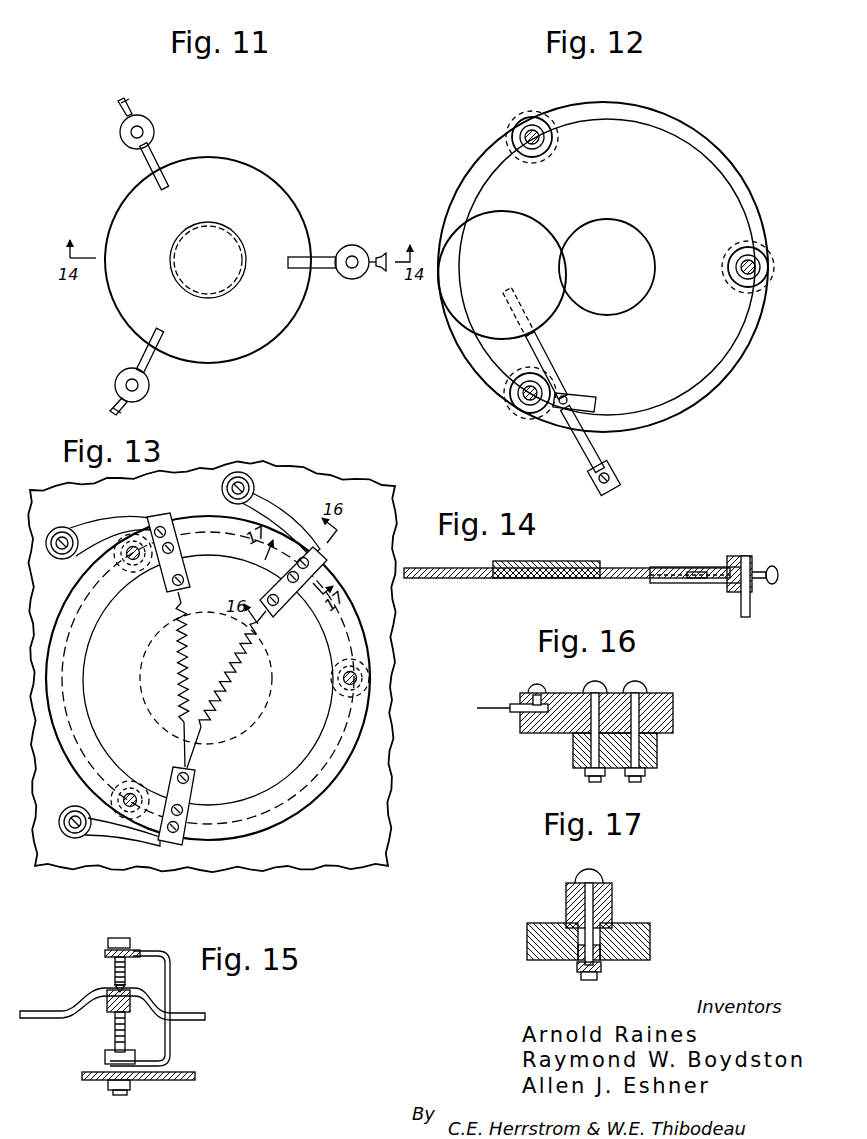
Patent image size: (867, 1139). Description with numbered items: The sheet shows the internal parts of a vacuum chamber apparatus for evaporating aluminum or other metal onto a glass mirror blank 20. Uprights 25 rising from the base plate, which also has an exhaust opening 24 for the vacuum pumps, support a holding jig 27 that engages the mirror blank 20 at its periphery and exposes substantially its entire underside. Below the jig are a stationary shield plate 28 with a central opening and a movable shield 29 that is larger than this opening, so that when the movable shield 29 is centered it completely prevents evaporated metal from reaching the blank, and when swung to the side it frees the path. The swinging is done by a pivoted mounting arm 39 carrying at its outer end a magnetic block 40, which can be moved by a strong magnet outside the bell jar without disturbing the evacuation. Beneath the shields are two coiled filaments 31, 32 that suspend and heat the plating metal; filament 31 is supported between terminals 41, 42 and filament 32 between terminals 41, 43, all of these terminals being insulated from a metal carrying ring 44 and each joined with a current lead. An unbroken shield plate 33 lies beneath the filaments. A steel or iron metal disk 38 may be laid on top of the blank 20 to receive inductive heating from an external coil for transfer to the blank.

In FIG. 11, the mirror blank 20 is at (205, 290).
In FIG. 14, the mirror blank 20 is at (603, 572).
In FIG. 13, the exhaust opening 24 is at (270, 672).
In FIG. 11, the uprights 25 is at (143, 131).
In FIG. 12, the uprights 25 is at (526, 137).
In FIG. 13, the uprights 25 is at (134, 565).
In FIG. 14, the uprights 25 is at (740, 598).
In FIG. 11, the holding jig 27 is at (208, 260).
In FIG. 14, the holding jig 27 is at (484, 579).
In FIG. 12, the stationary shield plate 28 is at (613, 249).
In FIG. 15, the stationary shield plate 28 is at (183, 1073).
In FIG. 12, the movable shield 29 is at (517, 222).
In FIG. 13, the coiled filament 31 is at (178, 670).
In FIG. 13, the coiled filament 32 is at (225, 710).
In FIG. 16, the coiled filament 32 is at (496, 707).
In FIG. 13, the unbroken shield plate 33 is at (208, 680).
In FIG. 14, the metal disk 38 is at (556, 562).
In FIG. 12, the mounting arm 39 is at (548, 358).
In FIG. 15, the mounting arm 39 is at (45, 1010).
In FIG. 12, the magnetic block 40 is at (615, 482).
In FIG. 13, the terminal 41 is at (188, 793).
In FIG. 13, the terminal 42 is at (189, 575).
In FIG. 13, the terminal 43 is at (285, 607).
In FIG. 16, the terminal 43 is at (657, 713).
In FIG. 17, the terminal 43 is at (610, 905).
In FIG. 12, the metal carrying ring 44 is at (722, 370).
In FIG. 13, the metal carrying ring 44 is at (295, 810).
In FIG. 16, the metal carrying ring 44 is at (660, 753).
In FIG. 17, the metal carrying ring 44 is at (530, 943).